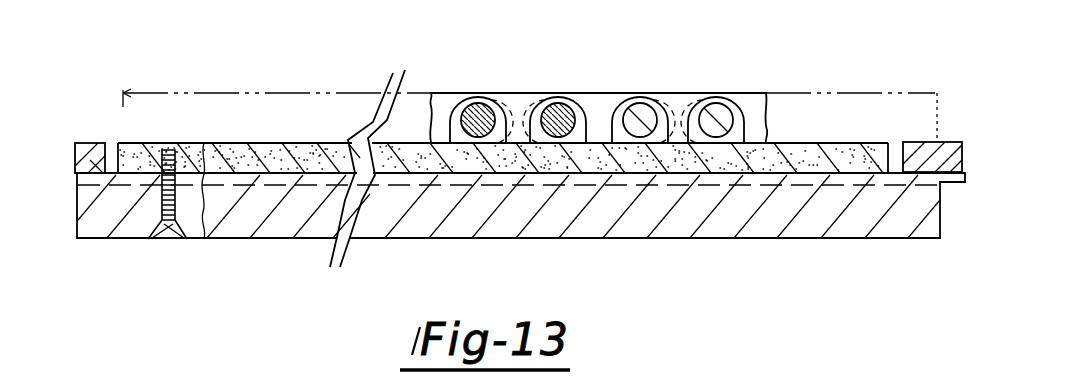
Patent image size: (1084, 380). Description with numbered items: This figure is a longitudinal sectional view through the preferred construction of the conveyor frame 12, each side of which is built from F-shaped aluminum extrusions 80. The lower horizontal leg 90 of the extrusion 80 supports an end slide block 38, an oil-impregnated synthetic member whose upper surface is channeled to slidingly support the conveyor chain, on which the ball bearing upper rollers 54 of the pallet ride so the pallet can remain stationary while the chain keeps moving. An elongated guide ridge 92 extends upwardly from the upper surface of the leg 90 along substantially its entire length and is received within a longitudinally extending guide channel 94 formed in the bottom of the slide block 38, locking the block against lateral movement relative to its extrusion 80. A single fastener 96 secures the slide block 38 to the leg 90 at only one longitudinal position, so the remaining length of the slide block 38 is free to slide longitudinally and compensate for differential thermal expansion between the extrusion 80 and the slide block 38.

The frame 12 is at (478, 240).
The slide block 38 is at (108, 125).
The upper rollers 54 is at (717, 120).
The F-shaped extrusion 80 is at (287, 248).
The lower horizontal leg 90 is at (790, 207).
The guide ridge 92 is at (667, 180).
The guide channel 94 is at (846, 172).
The fastener 96 is at (151, 238).